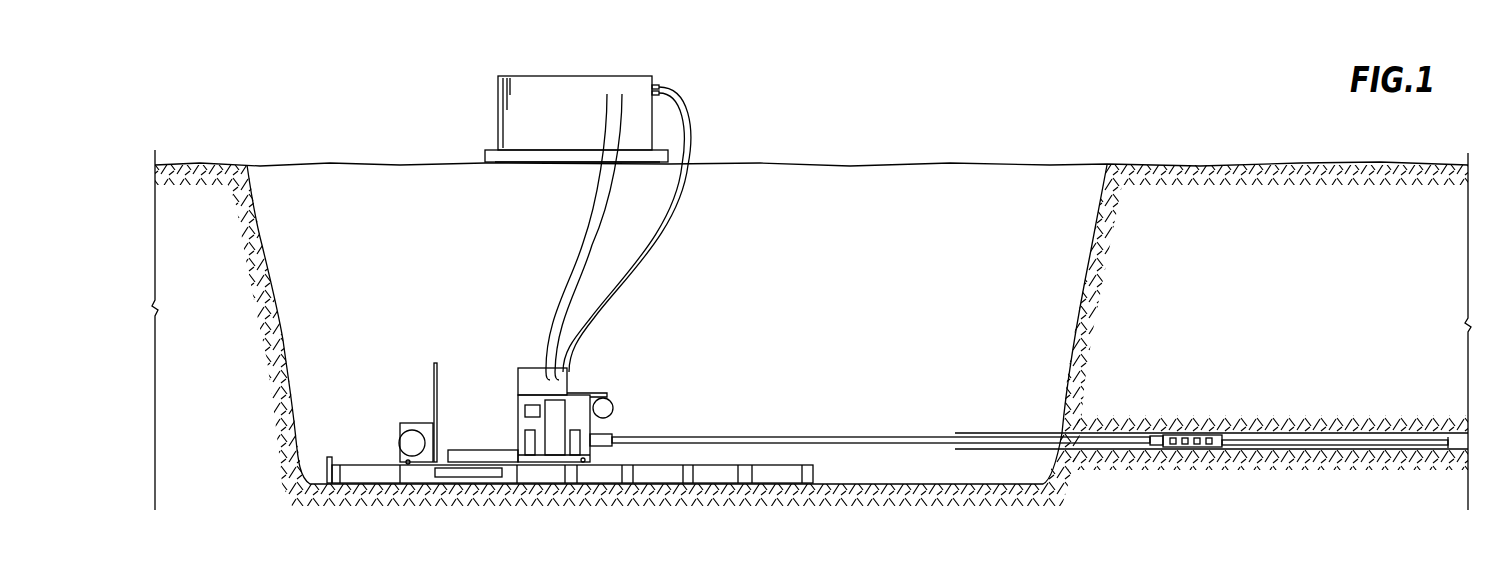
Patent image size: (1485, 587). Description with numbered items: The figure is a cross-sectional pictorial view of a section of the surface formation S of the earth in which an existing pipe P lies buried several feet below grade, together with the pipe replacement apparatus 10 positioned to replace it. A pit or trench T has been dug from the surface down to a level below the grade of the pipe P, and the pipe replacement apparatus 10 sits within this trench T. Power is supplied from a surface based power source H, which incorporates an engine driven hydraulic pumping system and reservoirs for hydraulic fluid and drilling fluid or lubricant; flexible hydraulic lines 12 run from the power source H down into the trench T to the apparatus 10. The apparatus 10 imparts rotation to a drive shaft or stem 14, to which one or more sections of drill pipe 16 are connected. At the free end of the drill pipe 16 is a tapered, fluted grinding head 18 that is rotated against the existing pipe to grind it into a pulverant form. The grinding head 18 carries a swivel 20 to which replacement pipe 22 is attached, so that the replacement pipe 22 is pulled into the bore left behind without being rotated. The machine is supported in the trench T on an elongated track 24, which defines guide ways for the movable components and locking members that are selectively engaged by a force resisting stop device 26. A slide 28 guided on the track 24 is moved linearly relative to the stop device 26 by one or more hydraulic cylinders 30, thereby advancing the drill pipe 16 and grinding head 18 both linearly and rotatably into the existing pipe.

The pipe replacement apparatus 10 is at (594, 361).
The flexible hydraulic lines 12 is at (588, 248).
The drive shaft or stem 14 is at (611, 435).
The drill pipe 16 is at (808, 437).
The tapered, fluted grinding head 18 is at (1177, 436).
The swivel 20 is at (1155, 446).
The replacement pipe 22 is at (998, 433).
The elongated track 24 is at (725, 474).
The force resisting stop device 26 is at (417, 425).
The slide 28 is at (482, 450).
The hydraulic cylinders 30 is at (480, 474).
The surface based power source H is at (520, 80).
The pit or trench T is at (893, 197).
The surface formation S is at (1262, 197).
The pipe P is at (1332, 435).